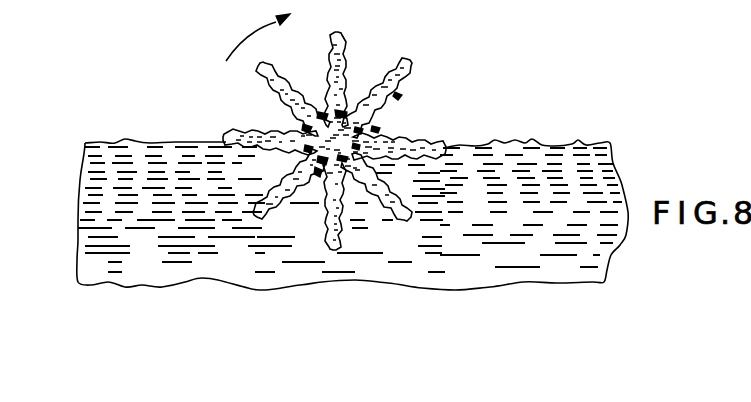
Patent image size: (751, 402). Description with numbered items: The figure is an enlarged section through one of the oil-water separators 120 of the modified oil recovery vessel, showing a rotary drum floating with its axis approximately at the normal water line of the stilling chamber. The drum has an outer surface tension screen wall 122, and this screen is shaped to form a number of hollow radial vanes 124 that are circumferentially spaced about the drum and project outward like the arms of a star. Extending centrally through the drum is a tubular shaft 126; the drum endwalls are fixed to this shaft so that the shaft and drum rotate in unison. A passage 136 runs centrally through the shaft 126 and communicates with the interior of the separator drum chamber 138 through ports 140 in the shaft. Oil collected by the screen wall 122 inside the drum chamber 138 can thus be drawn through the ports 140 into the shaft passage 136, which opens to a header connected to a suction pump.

The oil-water separator 120 is at (351, 20).
The separator drum chamber 138 is at (347, 103).
The surface tension screen wall 122 is at (400, 95).
The hollow radial vane 124 is at (252, 130).
The tubular shaft 126 is at (377, 130).
The passage 136 is at (332, 140).
The port 140 is at (332, 141).